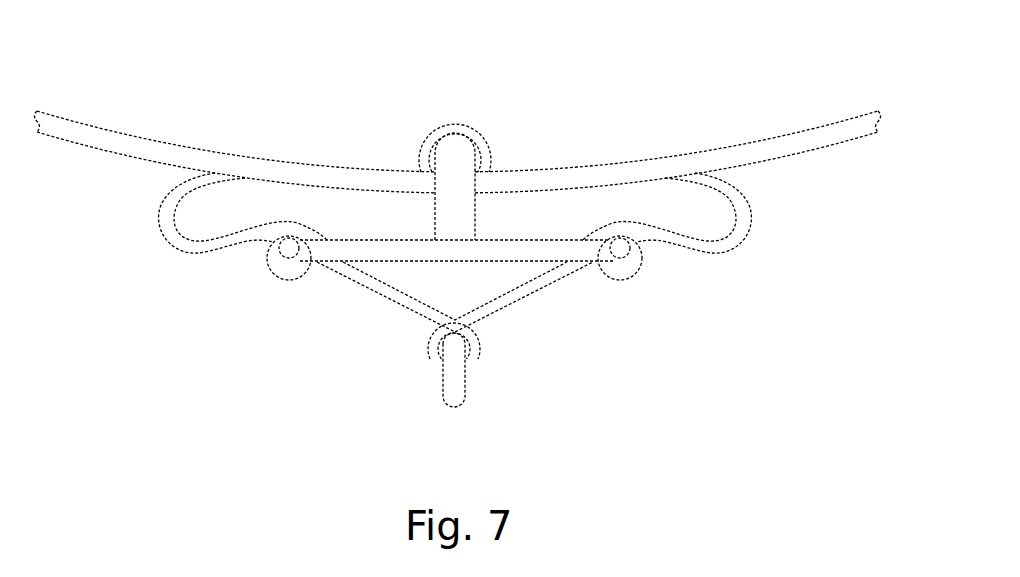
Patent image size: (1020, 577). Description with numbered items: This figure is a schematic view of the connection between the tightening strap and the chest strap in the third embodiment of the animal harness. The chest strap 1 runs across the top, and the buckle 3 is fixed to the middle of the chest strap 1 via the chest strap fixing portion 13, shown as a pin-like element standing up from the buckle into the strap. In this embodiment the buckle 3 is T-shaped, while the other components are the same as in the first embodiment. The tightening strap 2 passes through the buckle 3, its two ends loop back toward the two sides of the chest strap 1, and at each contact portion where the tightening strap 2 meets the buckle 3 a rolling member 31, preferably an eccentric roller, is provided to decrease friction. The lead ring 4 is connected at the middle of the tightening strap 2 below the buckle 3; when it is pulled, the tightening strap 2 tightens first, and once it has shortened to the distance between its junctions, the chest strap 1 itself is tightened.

The chest strap 1 is at (807, 143).
The tightening strap 2 is at (733, 232).
The buckle 3 is at (500, 253).
The rolling member 31 is at (620, 270).
The chest strap fixing portion 13 is at (457, 130).
The lead ring 4 is at (457, 377).